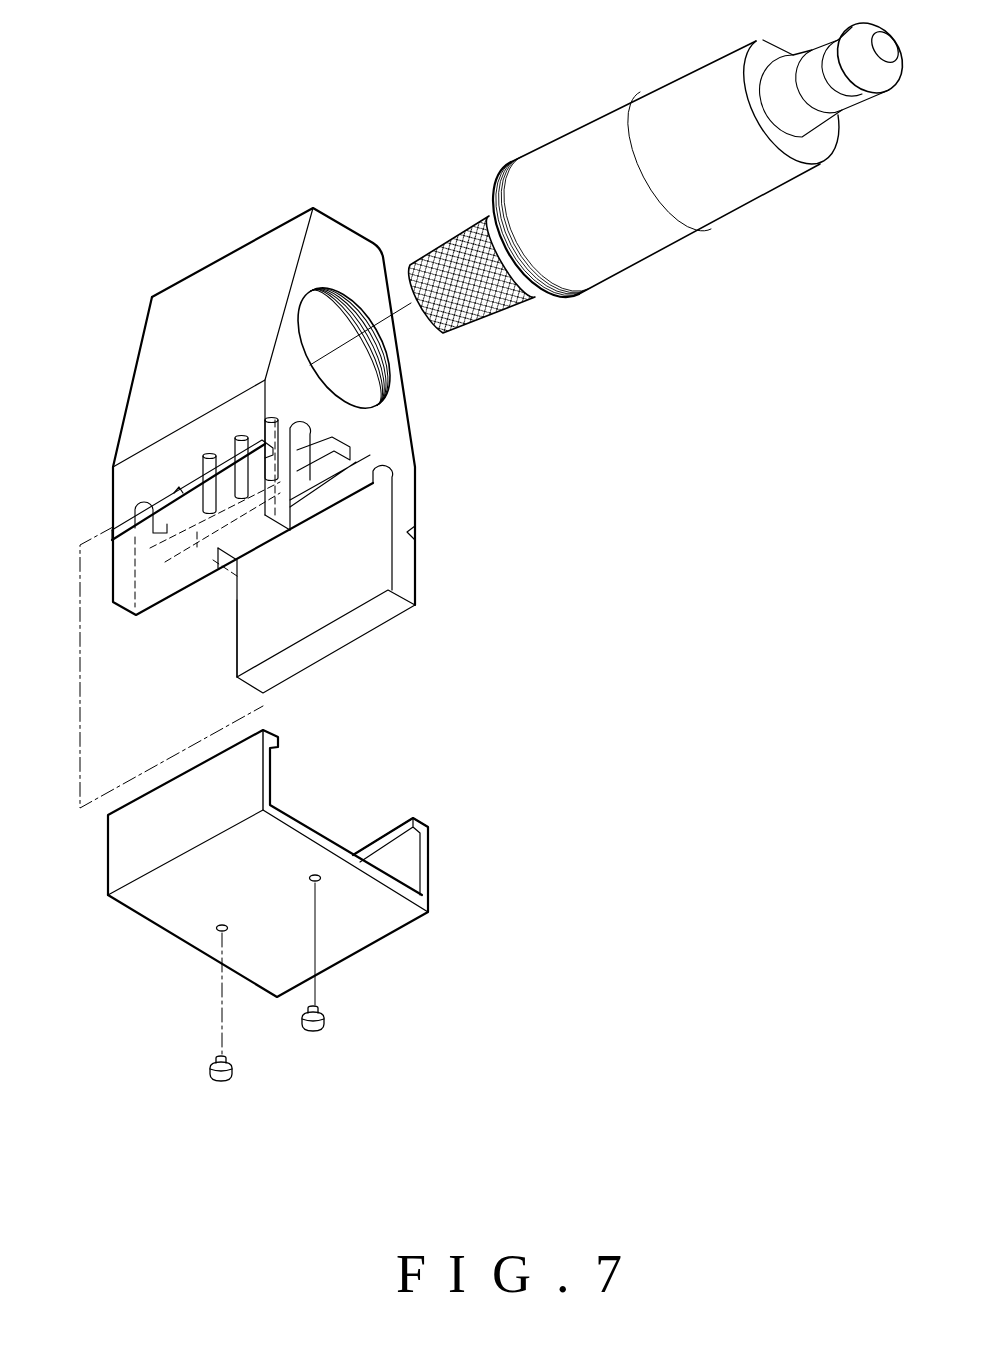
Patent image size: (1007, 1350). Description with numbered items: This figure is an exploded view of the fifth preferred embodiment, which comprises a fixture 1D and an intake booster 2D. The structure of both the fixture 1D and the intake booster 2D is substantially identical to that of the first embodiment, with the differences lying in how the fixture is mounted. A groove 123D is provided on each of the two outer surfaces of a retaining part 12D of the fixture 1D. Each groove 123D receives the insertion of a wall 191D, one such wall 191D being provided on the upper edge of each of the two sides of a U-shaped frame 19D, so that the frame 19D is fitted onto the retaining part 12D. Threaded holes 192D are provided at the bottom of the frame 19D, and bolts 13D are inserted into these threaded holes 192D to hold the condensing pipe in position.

The fixture 1D is at (236, 287).
The intake booster 2D is at (648, 240).
The retaining part 12D is at (160, 557).
The groove 123D is at (178, 490).
The U-shaped frame 19D is at (425, 878).
The wall 191D is at (417, 820).
The threaded holes 192D is at (219, 931).
The bolts 13D is at (312, 1032).